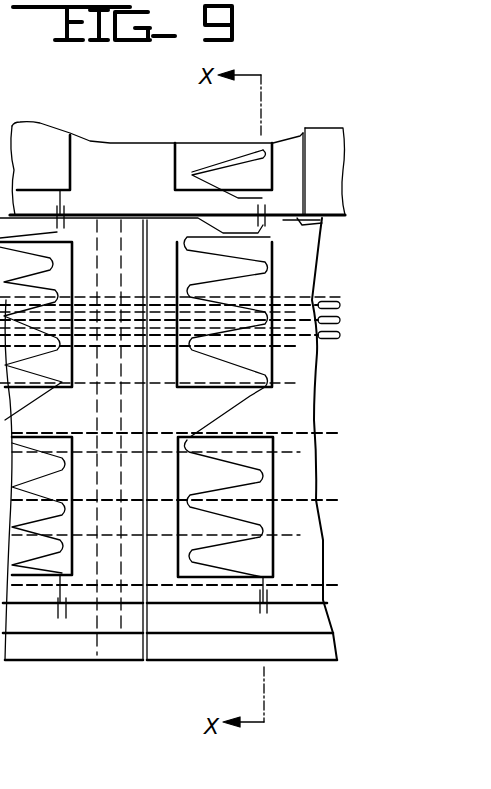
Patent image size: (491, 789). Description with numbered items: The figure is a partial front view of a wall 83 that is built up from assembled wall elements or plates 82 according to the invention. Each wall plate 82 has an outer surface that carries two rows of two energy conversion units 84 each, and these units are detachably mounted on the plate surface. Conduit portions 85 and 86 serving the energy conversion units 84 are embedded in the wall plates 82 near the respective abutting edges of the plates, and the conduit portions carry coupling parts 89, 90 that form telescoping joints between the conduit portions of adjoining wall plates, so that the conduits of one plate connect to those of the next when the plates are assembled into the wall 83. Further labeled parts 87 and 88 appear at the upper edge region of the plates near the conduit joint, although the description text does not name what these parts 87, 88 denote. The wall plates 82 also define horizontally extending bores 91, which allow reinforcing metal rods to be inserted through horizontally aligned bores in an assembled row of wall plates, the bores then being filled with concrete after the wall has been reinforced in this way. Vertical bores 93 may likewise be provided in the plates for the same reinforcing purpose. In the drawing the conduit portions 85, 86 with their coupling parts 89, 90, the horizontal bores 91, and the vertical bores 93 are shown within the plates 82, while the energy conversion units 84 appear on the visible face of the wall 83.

The wall plate 82 is at (114, 150).
The wall 83 is at (328, 267).
The energy conversion unit 84 is at (243, 480).
The conduit portion 85 is at (188, 213).
The conduit portion 86 is at (237, 197).
The flange 87 is at (322, 227).
The end block 88 is at (283, 213).
The coupling part 89 is at (265, 223).
The coupling part 90 is at (263, 205).
The horizontally extending bore 91 is at (299, 345).
The vertical bore 93 is at (112, 618).